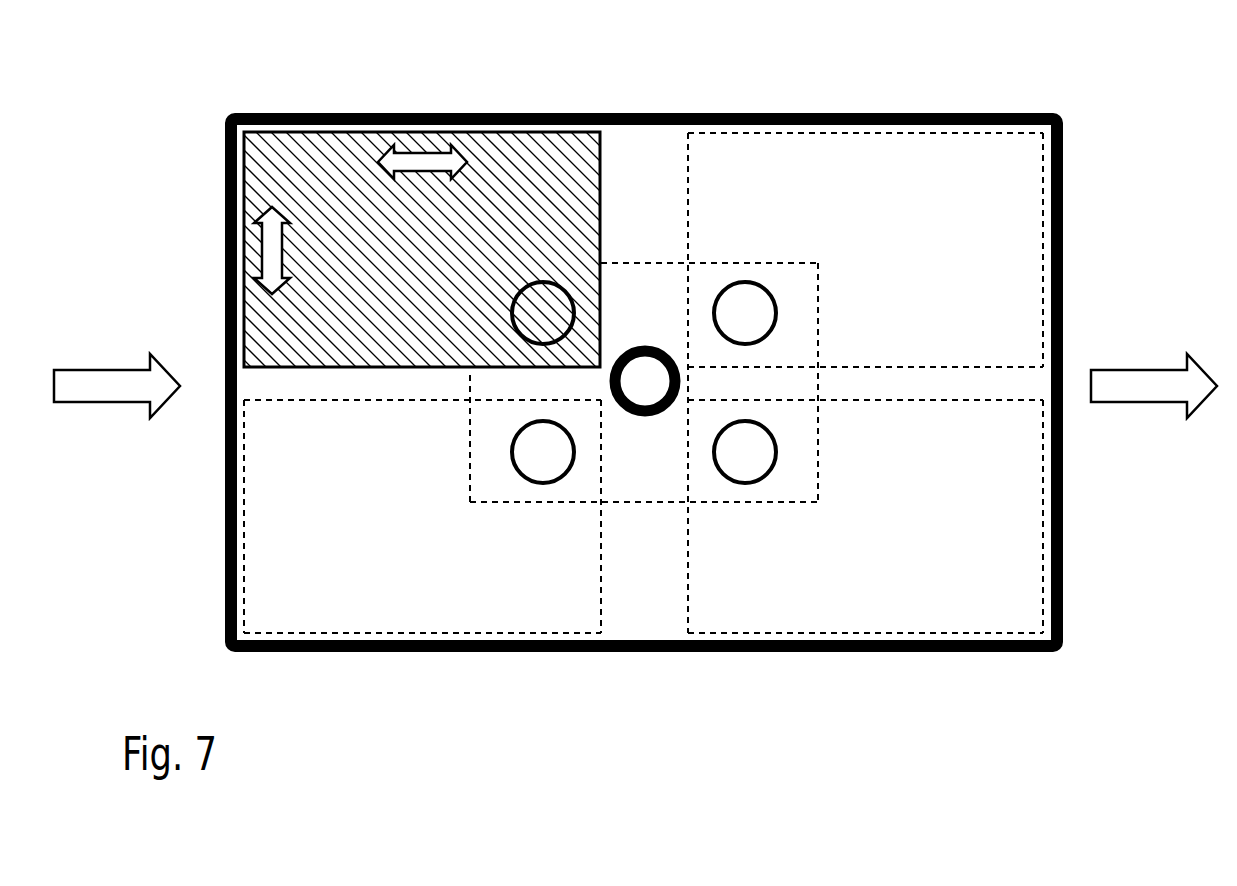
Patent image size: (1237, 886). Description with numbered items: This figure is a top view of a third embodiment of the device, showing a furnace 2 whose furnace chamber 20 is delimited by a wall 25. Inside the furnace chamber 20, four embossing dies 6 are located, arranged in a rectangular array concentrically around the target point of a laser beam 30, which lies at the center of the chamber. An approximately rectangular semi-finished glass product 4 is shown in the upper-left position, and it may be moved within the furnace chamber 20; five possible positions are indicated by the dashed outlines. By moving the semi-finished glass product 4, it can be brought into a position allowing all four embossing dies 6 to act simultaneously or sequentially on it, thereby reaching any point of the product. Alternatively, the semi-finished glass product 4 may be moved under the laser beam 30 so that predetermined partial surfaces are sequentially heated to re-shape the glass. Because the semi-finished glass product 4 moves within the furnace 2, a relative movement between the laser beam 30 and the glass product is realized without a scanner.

The furnace 2 is at (953, 92).
The semi-finished glass product 4 is at (566, 152).
The embossing die 6 is at (745, 472).
The furnace chamber 20 is at (655, 603).
The wall 25 is at (1064, 188).
The laser beam 30 is at (644, 367).